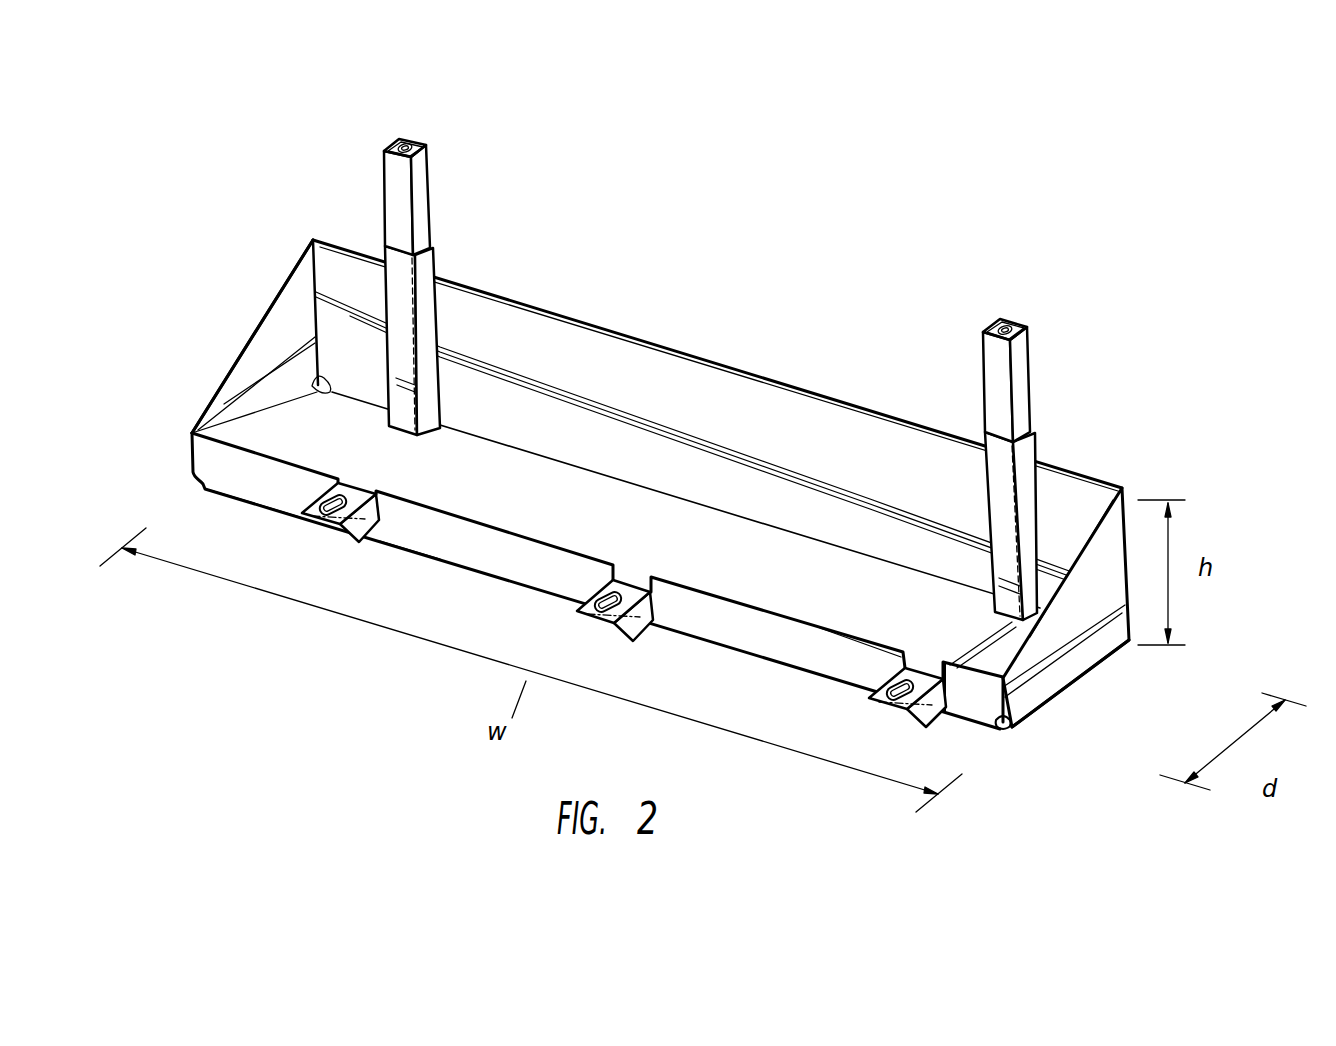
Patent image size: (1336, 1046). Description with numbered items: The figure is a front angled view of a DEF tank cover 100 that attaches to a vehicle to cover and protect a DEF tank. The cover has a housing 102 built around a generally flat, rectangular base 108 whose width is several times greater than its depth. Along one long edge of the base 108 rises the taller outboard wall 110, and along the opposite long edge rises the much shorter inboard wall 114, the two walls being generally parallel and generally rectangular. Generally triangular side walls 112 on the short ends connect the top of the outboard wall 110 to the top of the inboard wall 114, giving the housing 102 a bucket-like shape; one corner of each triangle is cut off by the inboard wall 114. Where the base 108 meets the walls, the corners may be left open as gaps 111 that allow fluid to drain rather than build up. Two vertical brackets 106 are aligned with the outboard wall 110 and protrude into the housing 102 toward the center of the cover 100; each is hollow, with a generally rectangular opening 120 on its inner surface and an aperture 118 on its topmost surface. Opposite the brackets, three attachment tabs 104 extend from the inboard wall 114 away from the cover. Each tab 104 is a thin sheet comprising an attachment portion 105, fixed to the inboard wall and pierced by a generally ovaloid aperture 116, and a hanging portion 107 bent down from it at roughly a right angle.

The DEF tank cover 100 is at (211, 133).
The housing 102 is at (1152, 688).
The attachment tab 104 is at (362, 532).
The attachment portion 105 is at (345, 487).
The vertical bracket 106 is at (428, 318).
The hanging portion 107 is at (400, 528).
The base 108 is at (622, 520).
The outboard wall 110 is at (578, 348).
The corner gap 111 is at (1008, 734).
The side wall 112 is at (256, 368).
The inboard wall 114 is at (763, 630).
The aperture 116 is at (327, 510).
The aperture 118 is at (401, 142).
The opening 120 is at (398, 200).